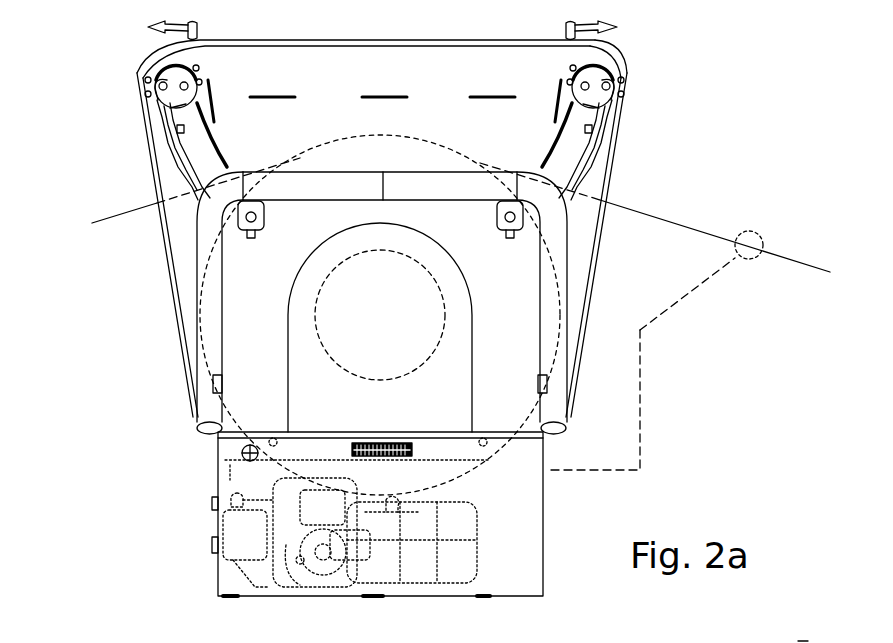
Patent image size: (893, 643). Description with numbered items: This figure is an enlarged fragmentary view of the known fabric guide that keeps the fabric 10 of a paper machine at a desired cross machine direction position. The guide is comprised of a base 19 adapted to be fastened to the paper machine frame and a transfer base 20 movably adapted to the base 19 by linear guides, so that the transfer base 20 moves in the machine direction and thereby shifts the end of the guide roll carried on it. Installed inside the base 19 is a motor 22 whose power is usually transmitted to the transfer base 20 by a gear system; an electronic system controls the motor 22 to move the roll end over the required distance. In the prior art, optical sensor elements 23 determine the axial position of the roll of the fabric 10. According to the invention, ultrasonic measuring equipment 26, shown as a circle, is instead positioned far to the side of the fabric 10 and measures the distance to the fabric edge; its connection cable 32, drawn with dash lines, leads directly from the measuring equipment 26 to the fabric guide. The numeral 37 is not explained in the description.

The fabric 10 is at (127, 207).
The base 19 is at (505, 515).
The transfer base 20 is at (545, 445).
The motor 22 is at (400, 550).
The sensor elements 23 is at (598, 72).
The ultrasonic measuring equipment 26 is at (750, 245).
The connection cable 32 is at (677, 305).
The element 37 is at (805, 640).